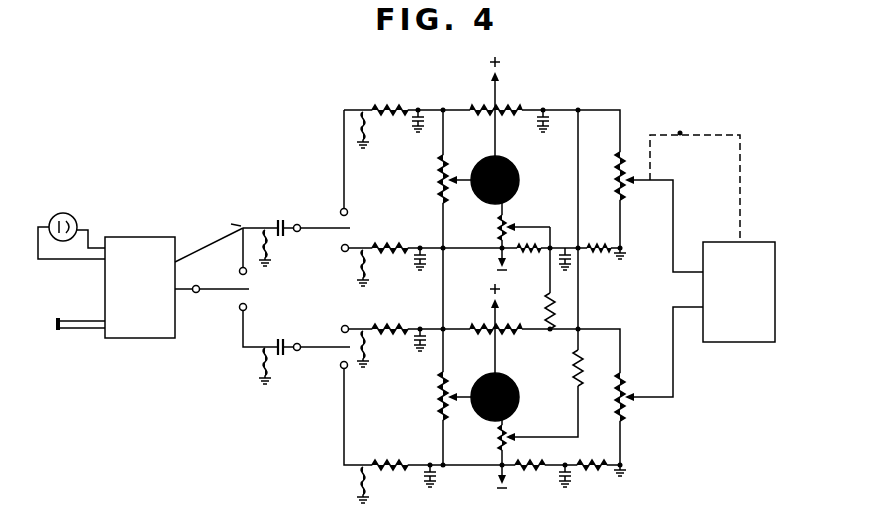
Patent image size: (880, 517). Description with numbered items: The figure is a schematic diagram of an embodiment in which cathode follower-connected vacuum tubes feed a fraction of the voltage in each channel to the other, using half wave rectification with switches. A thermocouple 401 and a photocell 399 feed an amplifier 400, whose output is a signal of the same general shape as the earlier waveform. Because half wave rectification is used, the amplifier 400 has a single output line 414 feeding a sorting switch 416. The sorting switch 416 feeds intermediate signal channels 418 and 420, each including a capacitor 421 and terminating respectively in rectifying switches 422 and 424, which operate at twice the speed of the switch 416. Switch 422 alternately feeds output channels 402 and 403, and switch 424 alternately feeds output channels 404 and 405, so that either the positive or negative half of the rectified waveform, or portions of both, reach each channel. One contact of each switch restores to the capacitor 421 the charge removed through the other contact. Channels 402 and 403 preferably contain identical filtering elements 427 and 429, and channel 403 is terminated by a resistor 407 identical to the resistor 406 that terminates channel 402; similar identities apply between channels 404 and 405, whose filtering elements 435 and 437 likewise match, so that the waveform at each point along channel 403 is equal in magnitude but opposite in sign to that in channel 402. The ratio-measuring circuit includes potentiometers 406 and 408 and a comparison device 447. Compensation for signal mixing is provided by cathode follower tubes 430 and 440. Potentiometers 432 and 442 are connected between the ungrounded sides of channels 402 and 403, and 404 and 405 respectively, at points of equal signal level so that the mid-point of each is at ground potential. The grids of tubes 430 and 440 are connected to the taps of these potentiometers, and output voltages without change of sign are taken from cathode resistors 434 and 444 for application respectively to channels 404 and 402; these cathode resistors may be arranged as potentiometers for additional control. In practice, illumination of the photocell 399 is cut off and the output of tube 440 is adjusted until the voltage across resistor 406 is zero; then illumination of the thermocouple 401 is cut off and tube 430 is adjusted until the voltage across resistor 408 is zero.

The photocell 399 is at (75, 217).
The amplifier 400 is at (132, 339).
The thermocouple 401 is at (73, 337).
The output channel 402 is at (380, 134).
The output channel 403 is at (380, 268).
The output channel 404 is at (379, 351).
The output channel 405 is at (381, 485).
The potentiometer 406 is at (617, 174).
The resistor 407 is at (598, 258).
The potentiometer 408 is at (617, 406).
The output line 414 is at (188, 283).
The sorting switch 416 is at (208, 293).
The intermediate signal channel 418 is at (282, 249).
The intermediate signal channel 420 is at (285, 367).
The capacitor 421 is at (280, 221).
The rectifying switch 422 is at (317, 229).
The rectifying switch 424 is at (317, 346).
The resistor 427 is at (393, 105).
The capacitor 429 is at (425, 122).
The cathode follower tube 430 is at (518, 191).
The potentiometer 432 is at (448, 170).
The cathode resistor 434 is at (498, 222).
The resistor 435 is at (397, 325).
The capacitor 437 is at (414, 338).
The cathode follower tube 440 is at (520, 382).
The potentiometer 442 is at (452, 382).
The cathode resistor 444 is at (497, 433).
The comparison device 447 is at (740, 343).